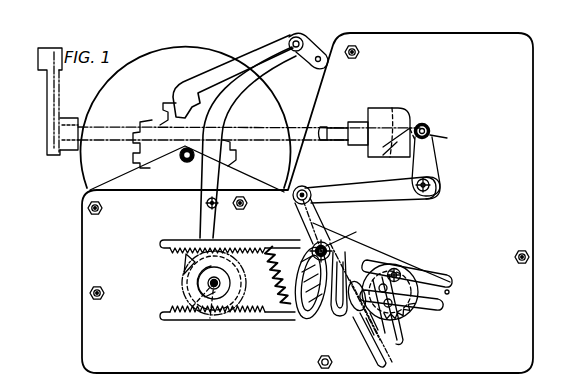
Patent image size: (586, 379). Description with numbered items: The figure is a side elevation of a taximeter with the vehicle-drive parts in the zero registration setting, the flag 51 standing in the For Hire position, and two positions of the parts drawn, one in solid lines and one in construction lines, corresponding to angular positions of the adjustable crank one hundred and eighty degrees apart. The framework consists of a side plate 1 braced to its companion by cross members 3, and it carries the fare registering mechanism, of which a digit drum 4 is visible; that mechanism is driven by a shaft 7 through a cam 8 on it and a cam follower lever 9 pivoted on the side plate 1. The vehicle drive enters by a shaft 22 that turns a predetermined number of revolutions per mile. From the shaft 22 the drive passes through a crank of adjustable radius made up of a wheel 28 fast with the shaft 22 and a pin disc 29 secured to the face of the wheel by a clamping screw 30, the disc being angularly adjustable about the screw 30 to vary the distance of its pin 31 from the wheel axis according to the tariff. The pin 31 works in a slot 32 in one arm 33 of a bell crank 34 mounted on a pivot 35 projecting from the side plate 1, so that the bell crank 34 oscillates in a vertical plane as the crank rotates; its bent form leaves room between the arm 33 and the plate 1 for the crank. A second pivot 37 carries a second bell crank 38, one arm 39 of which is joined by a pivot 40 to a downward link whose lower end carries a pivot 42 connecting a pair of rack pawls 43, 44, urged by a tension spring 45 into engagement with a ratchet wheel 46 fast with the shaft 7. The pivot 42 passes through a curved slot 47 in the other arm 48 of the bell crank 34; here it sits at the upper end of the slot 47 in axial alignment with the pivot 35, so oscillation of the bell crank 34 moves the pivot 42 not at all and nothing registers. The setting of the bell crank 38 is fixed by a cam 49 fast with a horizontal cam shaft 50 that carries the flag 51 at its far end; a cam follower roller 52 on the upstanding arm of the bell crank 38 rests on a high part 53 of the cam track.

The side plate 1 is at (86, 267).
The cross member 3 is at (359, 51).
The digit drum 4 is at (117, 78).
The shaft 7 is at (214, 285).
The cam 8 is at (200, 285).
The cam follower lever 9 is at (201, 224).
The shaft 22 is at (402, 342).
The wheel 28 is at (412, 323).
The pin disc 29 is at (417, 312).
The clamping screw 30 is at (394, 268).
The pin 31 is at (402, 275).
The slot 32 is at (440, 292).
The arm 33 is at (439, 276).
The bell crank 34 is at (326, 238).
The pivot 35 is at (340, 246).
The second pivot 37 is at (417, 182).
The second bell crank 38 is at (443, 195).
The link 39 is at (359, 186).
The pivot 40 is at (305, 188).
The pivot 42 is at (298, 240).
The rack pawl 43 is at (240, 240).
The rack pawl 44 is at (258, 313).
The tension spring 45 is at (279, 293).
The ratchet wheel 46 is at (187, 268).
The curved slot 47 is at (336, 313).
The arm 48 is at (303, 262).
The cam 49 is at (377, 112).
The cam shaft 50 is at (249, 141).
The flag 51 is at (47, 100).
The cam follower roller 52 is at (430, 127).
The high part 53 is at (410, 128).